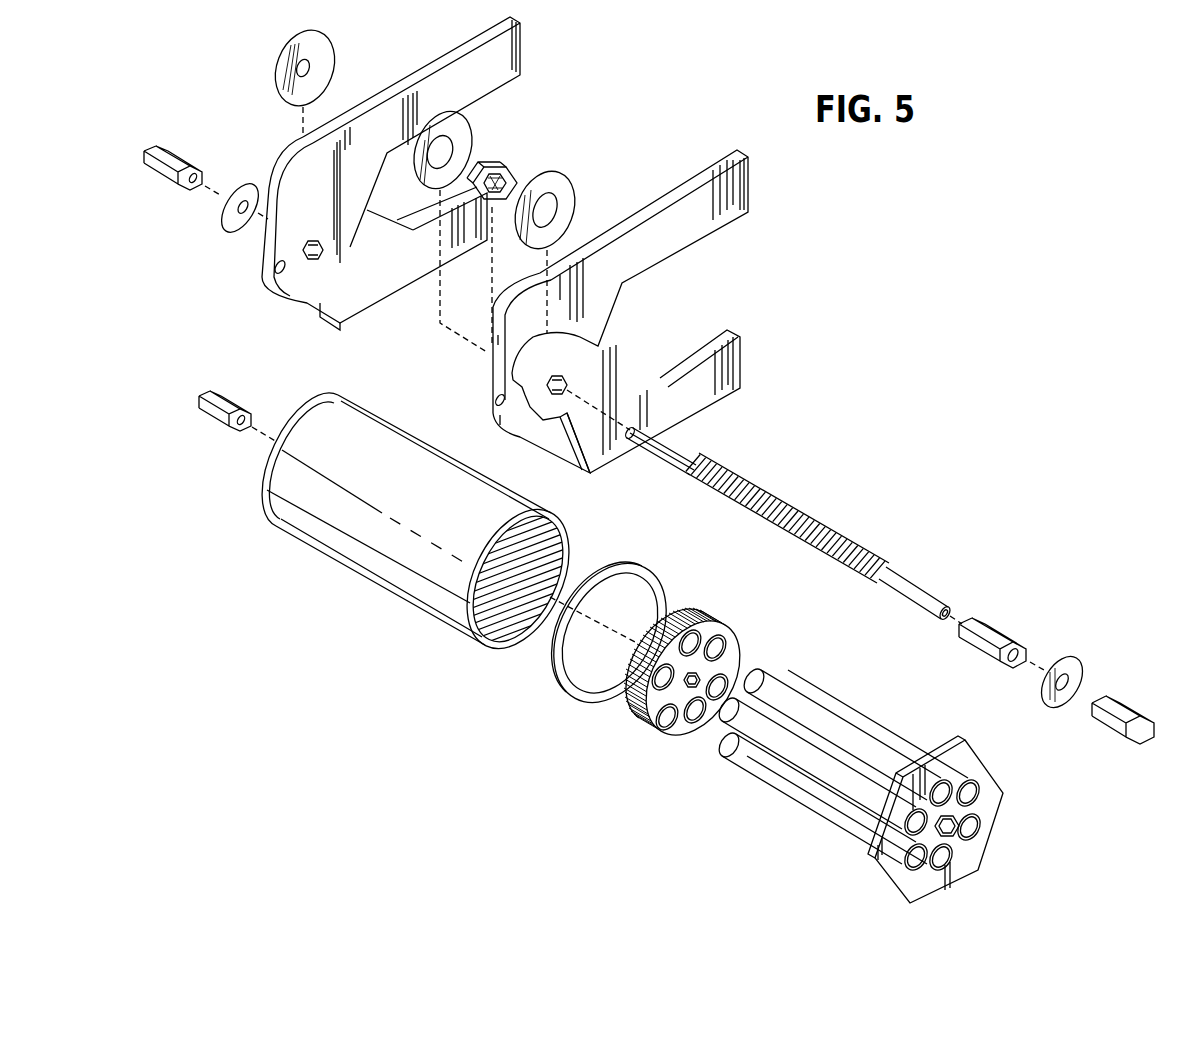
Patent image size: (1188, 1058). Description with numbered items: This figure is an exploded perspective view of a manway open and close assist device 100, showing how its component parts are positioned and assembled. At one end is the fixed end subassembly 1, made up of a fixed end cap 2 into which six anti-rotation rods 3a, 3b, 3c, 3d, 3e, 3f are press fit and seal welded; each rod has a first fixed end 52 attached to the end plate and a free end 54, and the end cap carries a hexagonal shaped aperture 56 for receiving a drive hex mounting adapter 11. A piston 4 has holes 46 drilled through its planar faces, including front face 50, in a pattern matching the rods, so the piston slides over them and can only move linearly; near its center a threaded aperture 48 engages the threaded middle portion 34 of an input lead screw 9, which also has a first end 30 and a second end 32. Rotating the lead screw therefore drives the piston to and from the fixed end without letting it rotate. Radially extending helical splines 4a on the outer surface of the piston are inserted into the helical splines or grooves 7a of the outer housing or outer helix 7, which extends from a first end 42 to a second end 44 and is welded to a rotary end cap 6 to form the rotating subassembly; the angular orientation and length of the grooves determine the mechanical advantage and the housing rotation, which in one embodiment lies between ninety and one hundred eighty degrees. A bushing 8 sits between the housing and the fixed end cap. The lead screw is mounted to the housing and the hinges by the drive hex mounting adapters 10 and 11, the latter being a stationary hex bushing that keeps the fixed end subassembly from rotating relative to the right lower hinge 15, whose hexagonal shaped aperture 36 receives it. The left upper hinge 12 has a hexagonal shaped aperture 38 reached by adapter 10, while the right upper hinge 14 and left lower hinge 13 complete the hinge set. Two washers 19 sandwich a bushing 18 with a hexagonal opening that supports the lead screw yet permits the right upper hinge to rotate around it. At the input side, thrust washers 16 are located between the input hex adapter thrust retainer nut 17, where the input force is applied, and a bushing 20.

The manway open and close assist device 100 is at (690, 65).
The left upper hinge 12 is at (373, 100).
The right upper hinge 14 is at (663, 200).
The right lower hinge 15 is at (697, 348).
The left lower hinge 13 is at (453, 190).
The bushing 18 is at (510, 167).
The washers 19 is at (468, 122).
The bushing 20 is at (276, 73).
The thrust washers 16 is at (248, 195).
The input hex adapter thrust retainer nut 17 is at (190, 152).
The hexagonal shaped aperture 38 is at (322, 253).
The hexagonal shaped aperture 36 is at (568, 385).
The second end 32 is at (640, 450).
The threaded middle portion 34 is at (785, 503).
The input lead screw 9 is at (898, 580).
The first end 30 is at (935, 603).
The drive hex mounting adapter 11 is at (990, 623).
The drive hex mounting adapter 10 is at (220, 433).
The rotary end cap 6 is at (268, 510).
The outer housing/outer helix 7 is at (393, 593).
The second end 44 is at (288, 533).
The first end 42 is at (482, 647).
The helical splines/grooves 7a is at (553, 548).
The bushing 8 is at (570, 695).
The piston 4 is at (647, 733).
The radial extending helical splines 4a is at (683, 607).
The front face 50 is at (707, 627).
The holes 46 is at (717, 647).
The threaded aperture 48 is at (698, 687).
The free end 54 is at (780, 670).
The anti-rotation rod 3a is at (787, 683).
The anti-rotation rod 3b is at (827, 750).
The anti-rotation rod 3c is at (852, 810).
The anti-rotation rod 3d is at (863, 843).
The anti-rotation rod 3e is at (963, 880).
The anti-rotation rod 3f is at (980, 835).
The fixed end subassembly 1 is at (868, 890).
The fixed end cap 2 is at (937, 887).
The first fixed end 52 is at (930, 757).
The hexagonal shaped aperture 56 is at (967, 823).